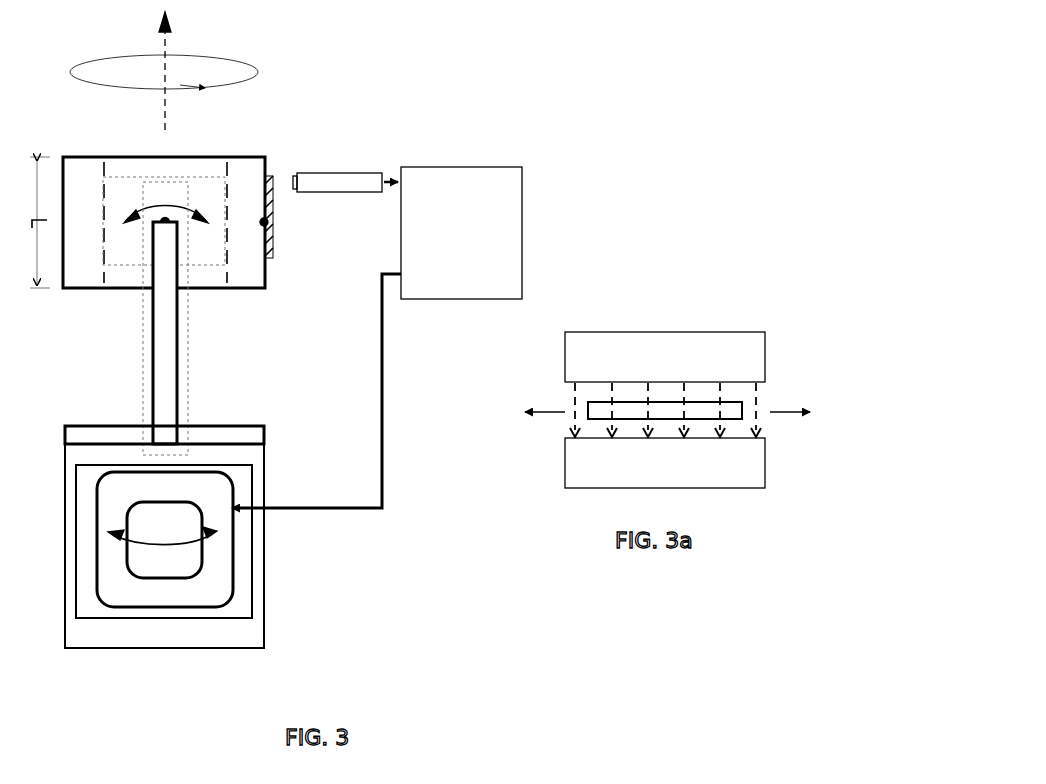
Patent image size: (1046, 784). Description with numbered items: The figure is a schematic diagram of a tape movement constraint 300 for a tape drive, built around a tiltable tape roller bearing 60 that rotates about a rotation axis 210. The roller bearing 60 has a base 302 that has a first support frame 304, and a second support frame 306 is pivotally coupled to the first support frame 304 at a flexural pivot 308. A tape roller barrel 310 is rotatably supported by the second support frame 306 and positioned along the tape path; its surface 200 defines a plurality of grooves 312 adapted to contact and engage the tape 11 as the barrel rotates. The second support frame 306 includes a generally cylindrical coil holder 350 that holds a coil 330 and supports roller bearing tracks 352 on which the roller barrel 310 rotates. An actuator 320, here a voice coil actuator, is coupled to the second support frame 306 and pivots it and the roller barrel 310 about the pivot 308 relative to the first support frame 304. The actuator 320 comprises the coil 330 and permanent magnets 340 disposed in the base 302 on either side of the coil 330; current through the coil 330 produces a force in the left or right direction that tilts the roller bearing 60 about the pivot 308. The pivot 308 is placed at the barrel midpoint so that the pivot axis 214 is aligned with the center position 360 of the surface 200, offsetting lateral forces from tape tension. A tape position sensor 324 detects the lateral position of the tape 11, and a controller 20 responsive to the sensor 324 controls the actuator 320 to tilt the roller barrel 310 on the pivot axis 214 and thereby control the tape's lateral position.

In FIG. 3, the tape movement constraint 300 is at (410, 86).
In FIG. 3, the rotation axis 210 is at (165, 37).
In FIG. 3, the surface of the roller barrel 200 is at (63, 286).
In FIG. 3, the tape roller bearing 60 is at (256, 292).
In FIG. 3, the roller bearing tracks 352 is at (212, 185).
In FIG. 3, the tape roller barrel 310 is at (243, 155).
In FIG. 3, the grooves 312 is at (275, 157).
In FIG. 3, the pivot 308 is at (165, 208).
In FIG. 3, the tape 11 is at (272, 212).
In FIG. 3, the center position 360 is at (270, 228).
In FIG. 3, the pivot axis 214 is at (165, 232).
In FIG. 3, the coil holder 350 is at (188, 352).
In FIG. 3, the first support frame 304 is at (180, 370).
In FIG. 3, the second support frame 306 is at (141, 385).
In FIG. 3, the base 302 is at (265, 620).
In FIG. 3, the actuator 320 is at (95, 630).
In FIG. 3, the permanent magnet 340 is at (217, 620).
In FIG. 3a, the permanent magnet 340 is at (742, 332).
In FIG. 3, the coil 330 is at (233, 567).
In FIG. 3a, the coil 330 is at (734, 400).
In FIG. 3, the tape position sensor 324 is at (360, 173).
In FIG. 3, the controller 20 is at (507, 167).